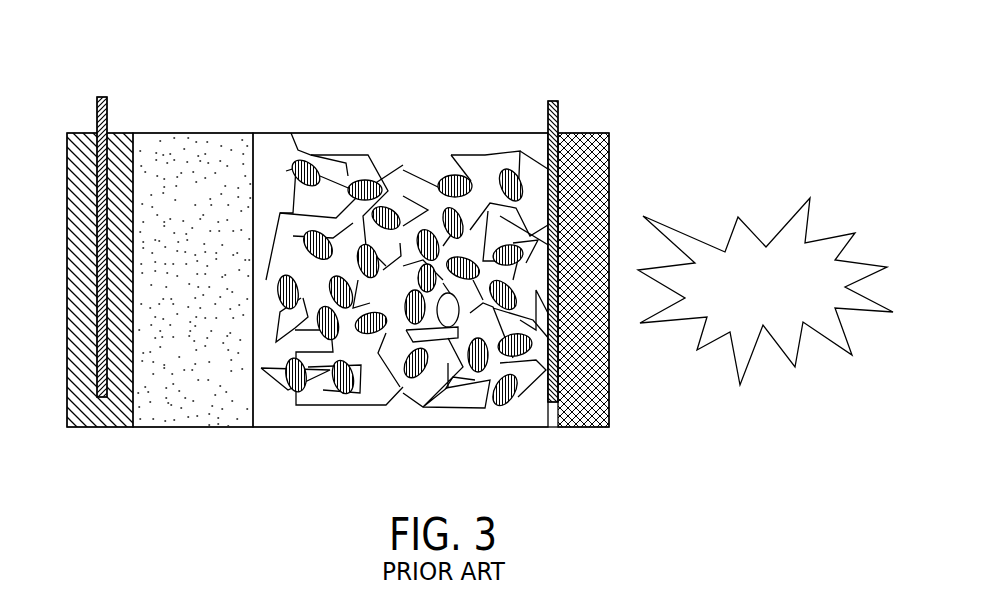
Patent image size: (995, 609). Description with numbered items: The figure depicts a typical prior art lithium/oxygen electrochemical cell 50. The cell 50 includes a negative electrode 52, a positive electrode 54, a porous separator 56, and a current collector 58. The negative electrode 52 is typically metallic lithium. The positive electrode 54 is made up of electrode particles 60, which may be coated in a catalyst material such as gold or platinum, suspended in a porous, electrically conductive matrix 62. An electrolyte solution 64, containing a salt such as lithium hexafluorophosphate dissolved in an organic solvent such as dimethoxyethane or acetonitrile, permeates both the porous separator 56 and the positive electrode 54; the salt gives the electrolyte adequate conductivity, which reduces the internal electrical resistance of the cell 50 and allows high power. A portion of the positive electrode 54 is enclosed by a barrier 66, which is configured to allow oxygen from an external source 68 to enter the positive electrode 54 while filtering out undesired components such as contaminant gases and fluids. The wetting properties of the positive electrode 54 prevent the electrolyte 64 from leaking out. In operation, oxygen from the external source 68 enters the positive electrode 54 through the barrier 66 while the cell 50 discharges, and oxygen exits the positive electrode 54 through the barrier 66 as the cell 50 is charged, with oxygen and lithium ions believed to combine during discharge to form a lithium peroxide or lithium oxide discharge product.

The lithium/oxygen electrochemical cell 50 is at (90, 75).
The negative electrode 52 is at (67, 233).
The positive electrode 54 is at (503, 428).
The porous separator 56 is at (177, 427).
The current collector 58 is at (560, 120).
The electrode particles 60 is at (305, 166).
The porous, electrically conductive matrix 62 is at (405, 167).
The electrolyte solution 64 is at (392, 412).
The barrier 66 is at (609, 152).
The external source 68 is at (812, 214).